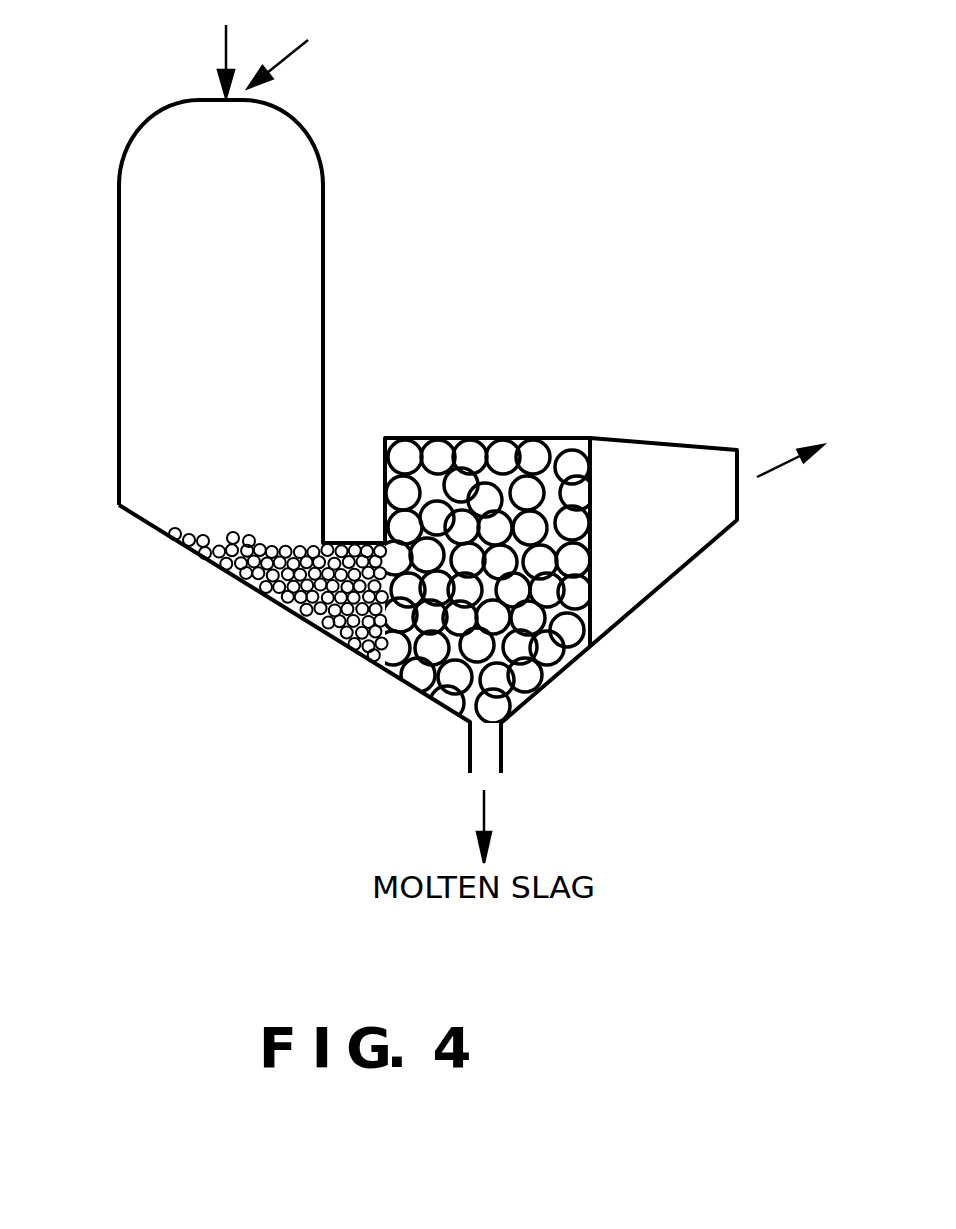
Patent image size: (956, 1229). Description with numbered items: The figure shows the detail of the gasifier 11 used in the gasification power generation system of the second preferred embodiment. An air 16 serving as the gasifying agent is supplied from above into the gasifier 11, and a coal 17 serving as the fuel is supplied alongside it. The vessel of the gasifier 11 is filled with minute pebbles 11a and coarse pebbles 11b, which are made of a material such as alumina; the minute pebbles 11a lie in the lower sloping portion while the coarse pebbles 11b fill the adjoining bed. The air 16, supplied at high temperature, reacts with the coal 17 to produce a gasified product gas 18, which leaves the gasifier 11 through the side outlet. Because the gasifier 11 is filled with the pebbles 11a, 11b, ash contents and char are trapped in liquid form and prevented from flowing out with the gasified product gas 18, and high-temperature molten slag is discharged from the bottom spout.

The gasifier 11 is at (445, 352).
The minute pebbles 11a is at (312, 618).
The coarse pebbles 11b is at (432, 648).
The air 16 is at (226, 41).
The coal 17 is at (284, 58).
The gasified product gas 18 is at (778, 469).